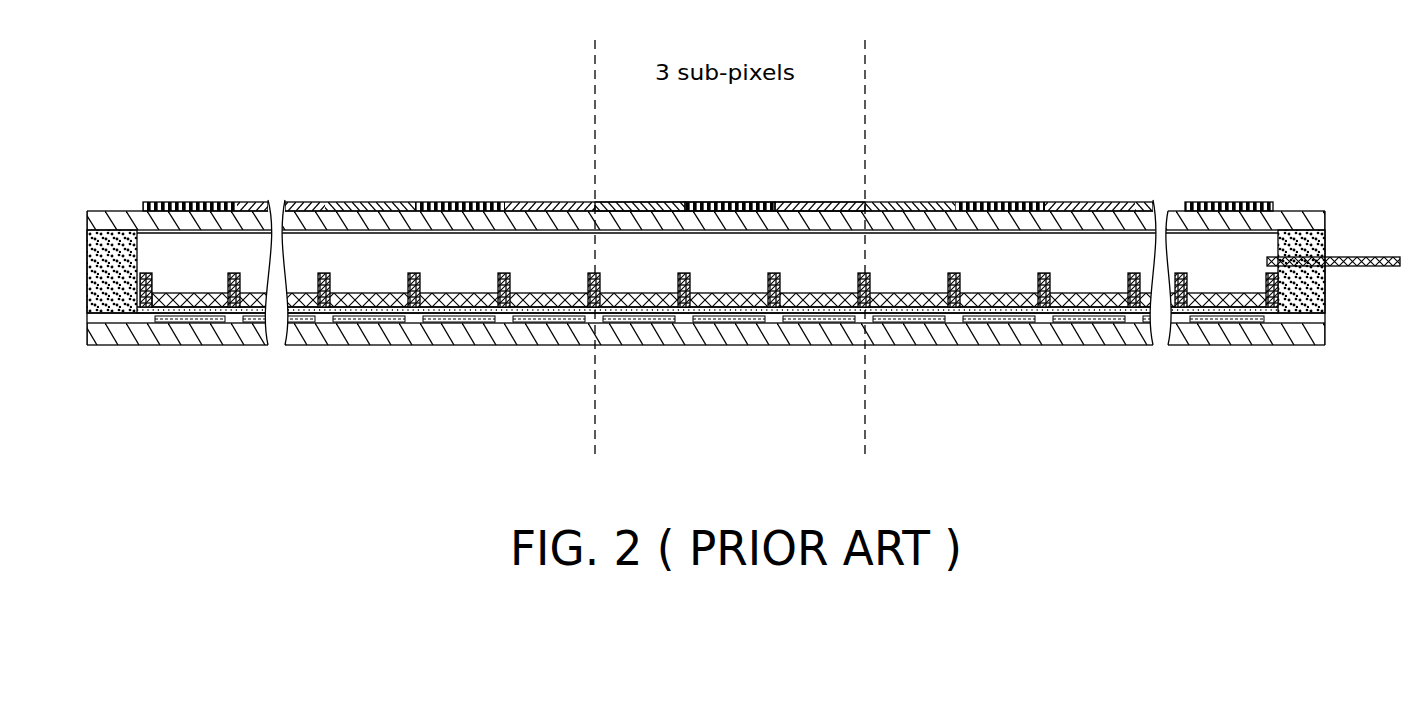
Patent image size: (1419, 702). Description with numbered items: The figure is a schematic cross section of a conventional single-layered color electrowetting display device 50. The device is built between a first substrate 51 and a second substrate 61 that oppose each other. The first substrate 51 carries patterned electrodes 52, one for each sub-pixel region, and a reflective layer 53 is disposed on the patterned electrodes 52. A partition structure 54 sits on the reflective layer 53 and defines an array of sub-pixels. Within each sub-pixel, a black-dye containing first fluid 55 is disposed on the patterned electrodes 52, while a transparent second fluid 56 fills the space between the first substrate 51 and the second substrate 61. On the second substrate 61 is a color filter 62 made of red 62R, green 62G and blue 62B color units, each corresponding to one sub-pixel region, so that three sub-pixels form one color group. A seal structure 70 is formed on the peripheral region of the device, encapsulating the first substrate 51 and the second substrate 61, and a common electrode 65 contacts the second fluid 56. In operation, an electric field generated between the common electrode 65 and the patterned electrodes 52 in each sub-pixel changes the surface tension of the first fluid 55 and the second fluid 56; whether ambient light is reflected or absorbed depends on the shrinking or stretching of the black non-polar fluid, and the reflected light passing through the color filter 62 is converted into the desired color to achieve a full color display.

The single-layered color electrowetting display device 50 is at (1350, 88).
The first substrate 51 is at (1316, 336).
The patterned electrodes 52 is at (1240, 320).
The reflective layer 53 is at (1000, 312).
The partition structure 54 is at (1046, 307).
The first fluid 55 is at (540, 300).
The second fluid 56 is at (1004, 253).
The second substrate 61 is at (1316, 222).
The color filter 62 is at (1077, 198).
The blue color unit 62B is at (646, 202).
The green color unit 62G is at (731, 202).
The red color unit 62R is at (821, 202).
The common electrode 65 is at (1357, 260).
The seal structure 70 is at (1316, 291).